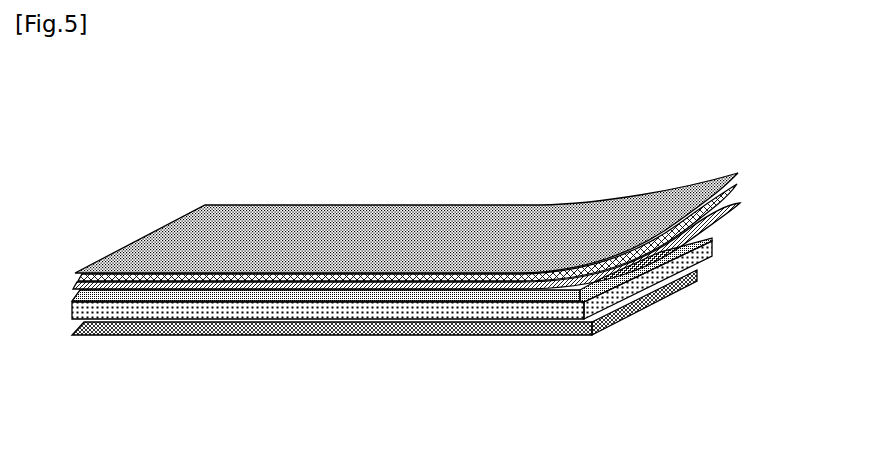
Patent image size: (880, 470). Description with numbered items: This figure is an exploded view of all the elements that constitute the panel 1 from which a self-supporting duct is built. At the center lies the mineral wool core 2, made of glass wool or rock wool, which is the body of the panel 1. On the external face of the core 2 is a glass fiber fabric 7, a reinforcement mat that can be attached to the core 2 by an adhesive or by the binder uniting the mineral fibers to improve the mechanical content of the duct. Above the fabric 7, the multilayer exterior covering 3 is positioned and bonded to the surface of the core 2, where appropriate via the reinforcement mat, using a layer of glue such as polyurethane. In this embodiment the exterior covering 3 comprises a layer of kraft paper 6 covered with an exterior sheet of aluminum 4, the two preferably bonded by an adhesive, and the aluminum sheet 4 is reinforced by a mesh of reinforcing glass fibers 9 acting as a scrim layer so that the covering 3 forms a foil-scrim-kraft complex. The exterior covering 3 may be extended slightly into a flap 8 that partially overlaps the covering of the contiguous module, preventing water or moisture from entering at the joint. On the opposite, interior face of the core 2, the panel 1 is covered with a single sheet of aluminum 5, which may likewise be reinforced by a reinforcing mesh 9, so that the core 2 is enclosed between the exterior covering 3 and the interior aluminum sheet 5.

The panel 1 is at (409, 237).
The mineral wool core 2 is at (350, 313).
The multilayer exterior covering 3 is at (405, 212).
The exterior sheet of aluminum 4 is at (565, 222).
The sheet of aluminum 5 is at (195, 337).
The kraft paper 6 is at (731, 215).
The glass fiber fabric 7 is at (555, 292).
The flap 8 is at (703, 189).
The mesh of reinforcing glass fibers 9 is at (733, 192).